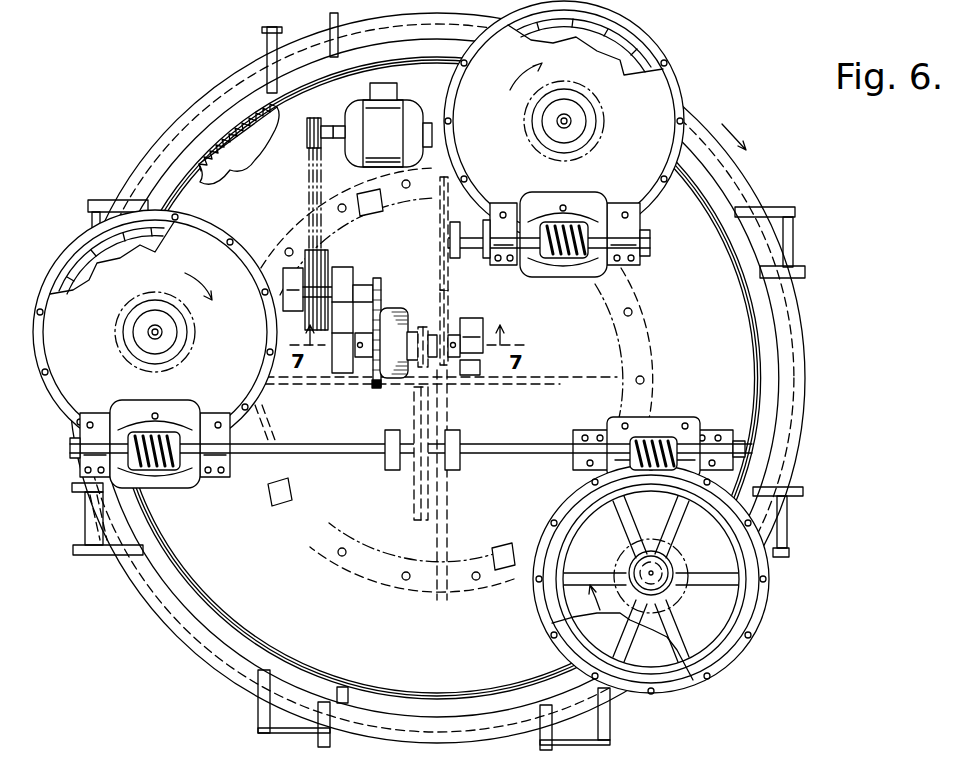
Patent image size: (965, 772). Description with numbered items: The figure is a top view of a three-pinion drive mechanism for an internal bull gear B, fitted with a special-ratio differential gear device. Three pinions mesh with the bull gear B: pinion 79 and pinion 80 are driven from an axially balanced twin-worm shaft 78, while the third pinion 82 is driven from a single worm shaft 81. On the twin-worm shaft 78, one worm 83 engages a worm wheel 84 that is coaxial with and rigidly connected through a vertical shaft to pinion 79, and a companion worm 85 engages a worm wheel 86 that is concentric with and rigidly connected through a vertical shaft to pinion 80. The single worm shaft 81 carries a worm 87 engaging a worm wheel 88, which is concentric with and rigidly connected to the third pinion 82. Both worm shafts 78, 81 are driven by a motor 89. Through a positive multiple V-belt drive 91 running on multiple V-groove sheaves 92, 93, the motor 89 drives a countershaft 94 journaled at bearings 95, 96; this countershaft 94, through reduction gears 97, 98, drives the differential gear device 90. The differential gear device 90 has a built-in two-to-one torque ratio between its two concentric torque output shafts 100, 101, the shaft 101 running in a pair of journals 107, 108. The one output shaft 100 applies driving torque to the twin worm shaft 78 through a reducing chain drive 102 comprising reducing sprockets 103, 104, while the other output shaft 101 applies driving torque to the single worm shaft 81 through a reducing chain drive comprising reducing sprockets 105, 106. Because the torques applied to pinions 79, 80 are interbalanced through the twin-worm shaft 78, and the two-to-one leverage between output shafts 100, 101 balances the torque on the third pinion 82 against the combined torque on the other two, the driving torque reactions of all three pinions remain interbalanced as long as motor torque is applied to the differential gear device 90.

The twin-worm shaft 78 is at (308, 455).
The pinion 79 is at (195, 332).
The pinion 80 is at (650, 610).
The single worm shaft 81 is at (459, 245).
The third pinion 82 is at (605, 116).
The worm 83 is at (158, 468).
The worm wheel 84 is at (137, 418).
The companion worm 85 is at (657, 437).
The worm wheel 86 is at (668, 492).
The worm 87 is at (566, 258).
The worm wheel 88 is at (583, 210).
The motor 89 is at (406, 107).
The differential gear device 90 is at (401, 299).
The multiple V-belt drive 91 is at (305, 191).
The V-groove sheave 92 is at (307, 133).
The V-groove sheave 93 is at (311, 320).
The countershaft 94 is at (359, 287).
The journal 95 is at (289, 270).
The journal 96 is at (342, 282).
The reduction gear 97 is at (377, 285).
The reduction gear 98 is at (376, 389).
The torque output shaft 100 is at (411, 330).
The torque output shaft 101 is at (483, 337).
The reducing chain drive 102 is at (433, 359).
The reducing sprocket 103 is at (417, 366).
The reducing sprocket 104 is at (417, 488).
The reducing sprocket 105 is at (448, 325).
The reducing sprocket 106 is at (439, 213).
The journal 107 is at (343, 357).
The journal 108 is at (481, 362).
The internal bull gear B is at (239, 144).